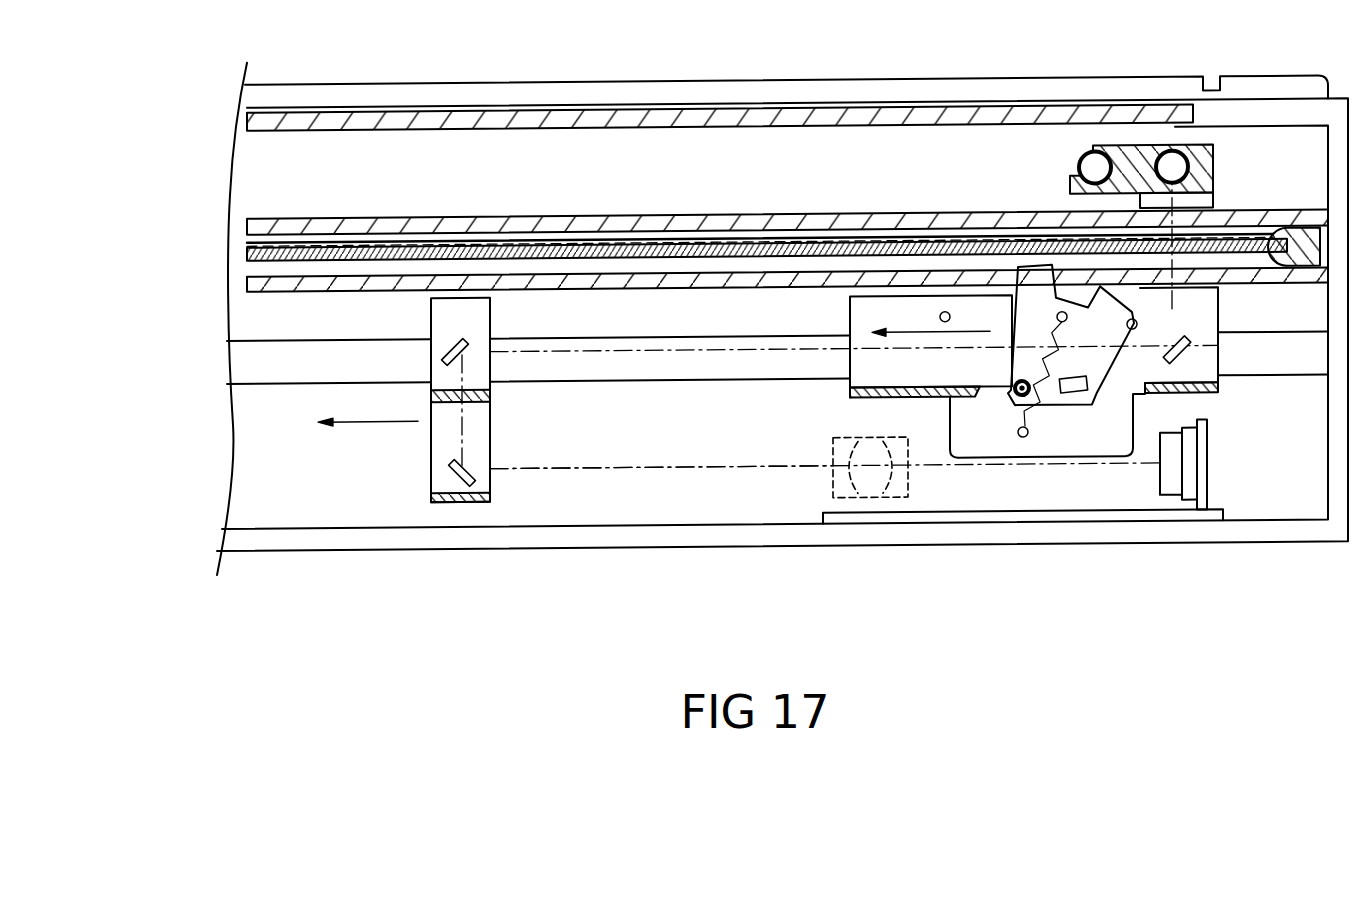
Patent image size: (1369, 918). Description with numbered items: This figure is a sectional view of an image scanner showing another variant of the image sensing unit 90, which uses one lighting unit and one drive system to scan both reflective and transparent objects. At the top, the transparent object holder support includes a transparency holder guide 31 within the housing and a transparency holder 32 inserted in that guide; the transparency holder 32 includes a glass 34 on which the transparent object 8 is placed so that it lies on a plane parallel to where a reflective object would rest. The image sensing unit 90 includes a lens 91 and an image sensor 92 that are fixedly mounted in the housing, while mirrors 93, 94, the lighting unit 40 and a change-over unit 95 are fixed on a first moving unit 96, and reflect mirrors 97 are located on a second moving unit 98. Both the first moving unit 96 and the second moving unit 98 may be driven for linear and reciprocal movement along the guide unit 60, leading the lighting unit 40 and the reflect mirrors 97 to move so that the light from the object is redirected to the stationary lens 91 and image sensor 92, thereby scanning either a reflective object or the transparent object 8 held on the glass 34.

The transparent object 8 is at (633, 239).
The transparency holder guide 31 is at (435, 212).
The transparency holder 32 is at (236, 257).
The glass 34 is at (697, 237).
The lighting unit 40 is at (1130, 148).
The guide unit 60 is at (267, 362).
The image sensing unit 90 is at (779, 442).
The lens 91 is at (867, 491).
The image sensor 92 is at (1203, 473).
The mirror 93 is at (1187, 358).
The mirror 94 is at (1078, 394).
The change-over unit 95 is at (1050, 432).
The first moving unit 96 is at (887, 313).
The reflect mirrors 97 is at (450, 343).
The second moving unit 98 is at (437, 452).